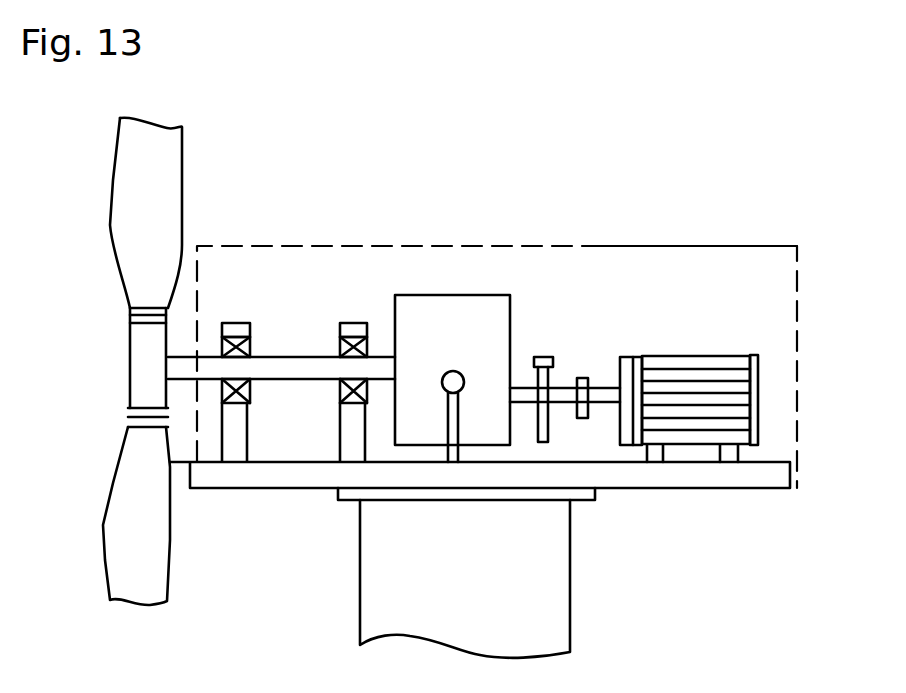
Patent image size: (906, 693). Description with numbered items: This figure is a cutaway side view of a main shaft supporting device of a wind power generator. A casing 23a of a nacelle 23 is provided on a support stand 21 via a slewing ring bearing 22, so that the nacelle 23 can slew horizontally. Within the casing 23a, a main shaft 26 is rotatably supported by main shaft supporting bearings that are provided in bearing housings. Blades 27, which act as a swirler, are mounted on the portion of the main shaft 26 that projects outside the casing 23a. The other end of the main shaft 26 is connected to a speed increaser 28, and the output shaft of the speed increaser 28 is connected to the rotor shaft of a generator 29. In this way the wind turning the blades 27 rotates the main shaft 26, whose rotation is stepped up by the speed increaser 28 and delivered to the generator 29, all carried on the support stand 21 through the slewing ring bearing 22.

The support stand 21 is at (540, 618).
The slewing ring bearing 22 is at (587, 503).
The nacelle 23 is at (311, 236).
The casing 23a is at (603, 247).
The main shaft 26 is at (302, 380).
The blades 27 is at (137, 195).
The speed increaser 28 is at (474, 300).
The generator 29 is at (698, 355).